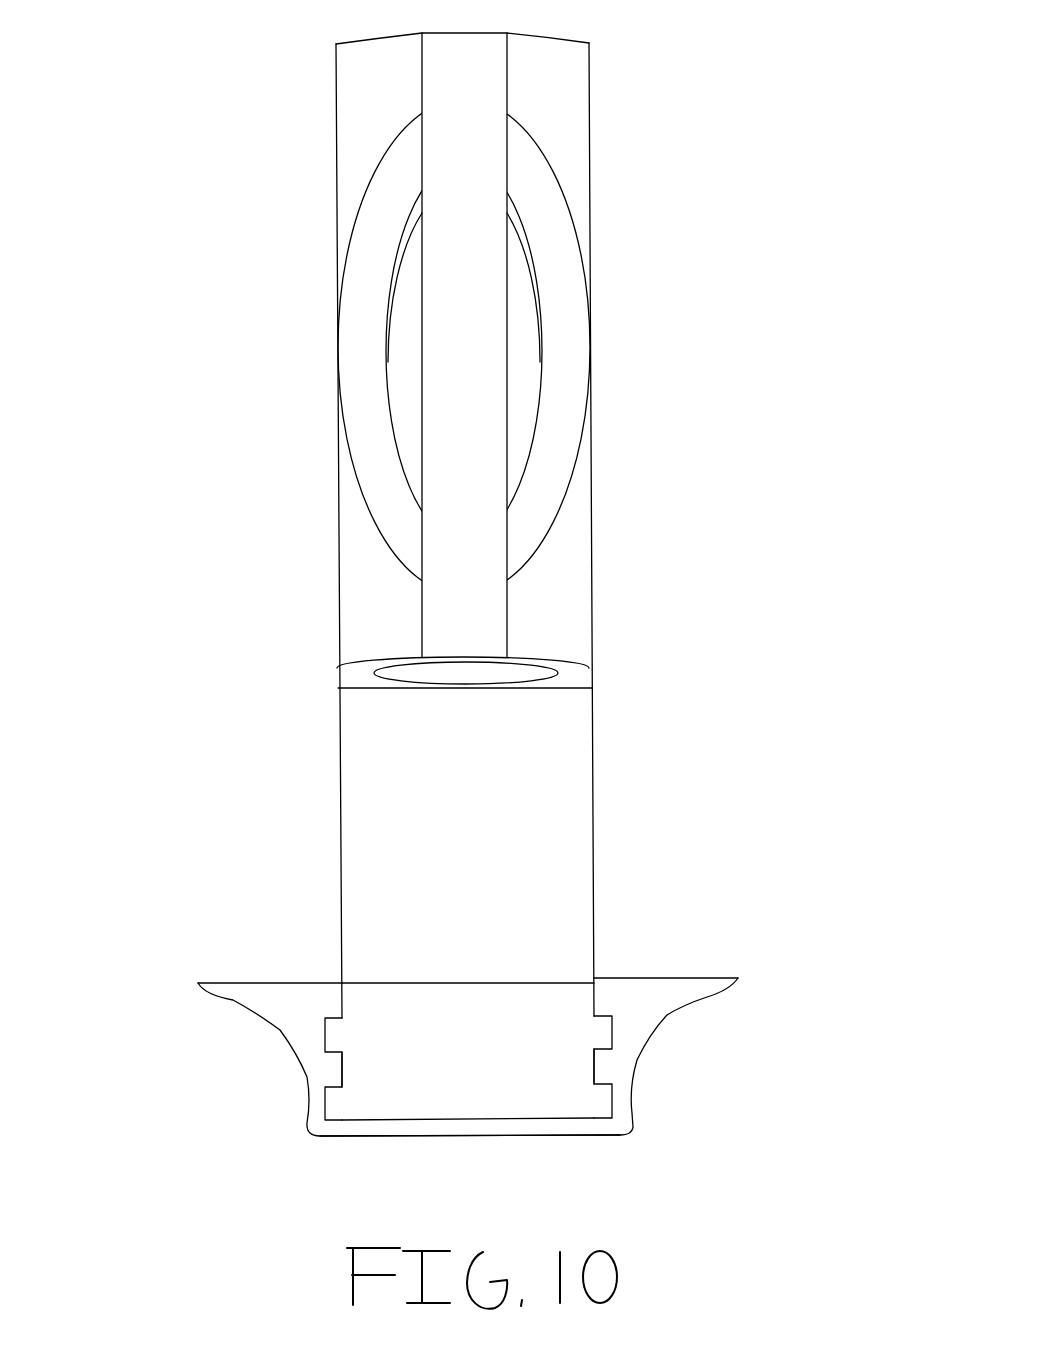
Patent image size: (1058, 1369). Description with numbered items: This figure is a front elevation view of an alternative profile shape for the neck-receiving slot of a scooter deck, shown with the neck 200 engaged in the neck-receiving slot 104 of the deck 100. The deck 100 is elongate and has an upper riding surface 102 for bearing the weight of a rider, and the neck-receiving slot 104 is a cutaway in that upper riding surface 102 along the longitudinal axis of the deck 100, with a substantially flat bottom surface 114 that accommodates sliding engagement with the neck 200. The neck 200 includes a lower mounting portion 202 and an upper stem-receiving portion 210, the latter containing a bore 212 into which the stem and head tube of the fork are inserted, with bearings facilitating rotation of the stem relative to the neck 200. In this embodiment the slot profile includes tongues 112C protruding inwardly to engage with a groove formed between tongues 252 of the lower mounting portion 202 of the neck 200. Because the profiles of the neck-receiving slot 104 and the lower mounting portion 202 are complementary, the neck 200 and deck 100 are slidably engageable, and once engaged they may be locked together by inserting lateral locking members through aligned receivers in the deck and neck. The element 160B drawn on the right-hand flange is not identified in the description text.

The deck 100 is at (195, 967).
The upper riding surface 102 is at (647, 985).
The neck-receiving slot 104 is at (383, 1148).
The tongues 112C is at (594, 1068).
The bottom surface 114 is at (563, 1122).
The flange curve 160B is at (643, 1040).
The neck 200 is at (340, 803).
The lower mounting portion 202 is at (333, 975).
The upper stem-receiving portion 210 is at (370, 40).
The bore 212 is at (592, 665).
The tongues 252 is at (325, 1043).